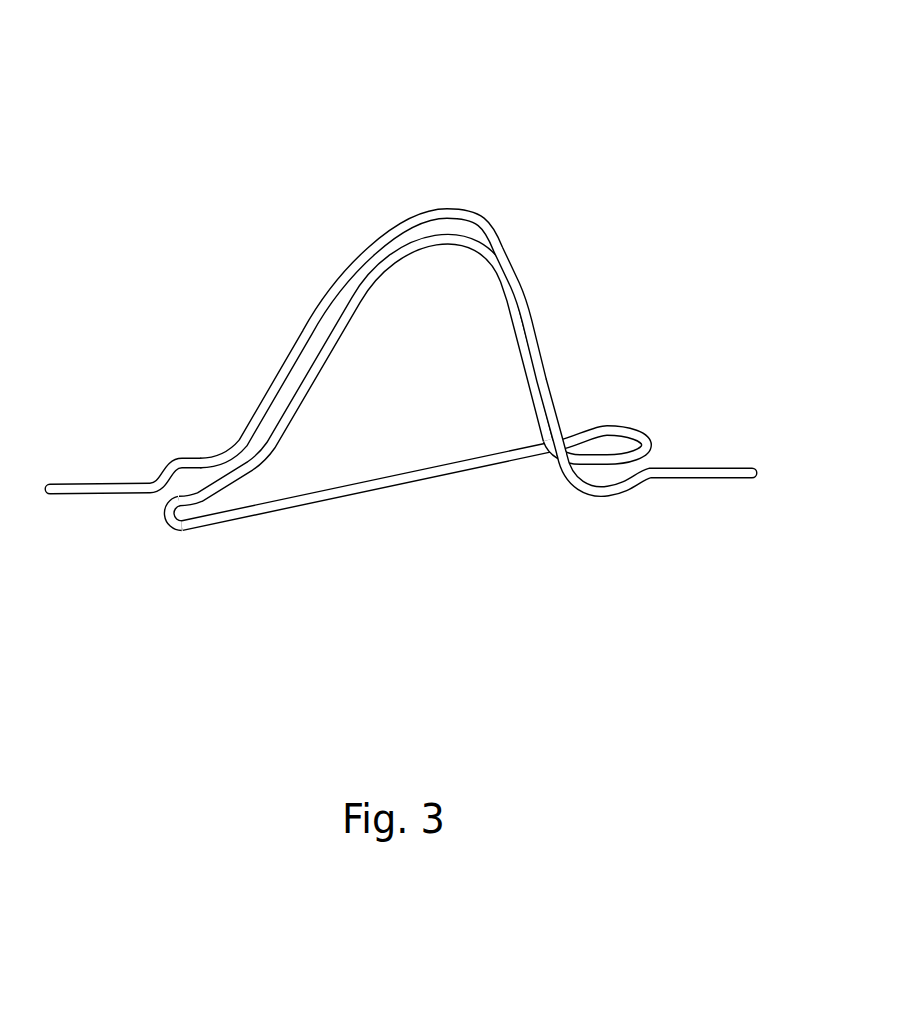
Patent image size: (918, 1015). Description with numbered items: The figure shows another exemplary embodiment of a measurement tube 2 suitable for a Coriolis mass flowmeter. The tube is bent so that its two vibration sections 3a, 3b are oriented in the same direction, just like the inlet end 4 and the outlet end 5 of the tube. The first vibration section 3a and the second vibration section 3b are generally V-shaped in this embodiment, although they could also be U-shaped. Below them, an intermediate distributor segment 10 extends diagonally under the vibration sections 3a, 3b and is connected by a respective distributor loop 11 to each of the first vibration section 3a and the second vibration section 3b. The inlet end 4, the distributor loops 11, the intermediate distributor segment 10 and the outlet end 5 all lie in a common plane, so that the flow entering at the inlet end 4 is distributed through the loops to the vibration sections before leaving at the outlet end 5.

The measurement tube 2 is at (518, 151).
The first vibration section 3a is at (432, 212).
The second vibration section 3b is at (478, 243).
The inlet end 4 is at (97, 488).
The outlet end 5 is at (697, 474).
The intermediate distributor segment 10 is at (395, 482).
The distributor loop 11 is at (173, 522).